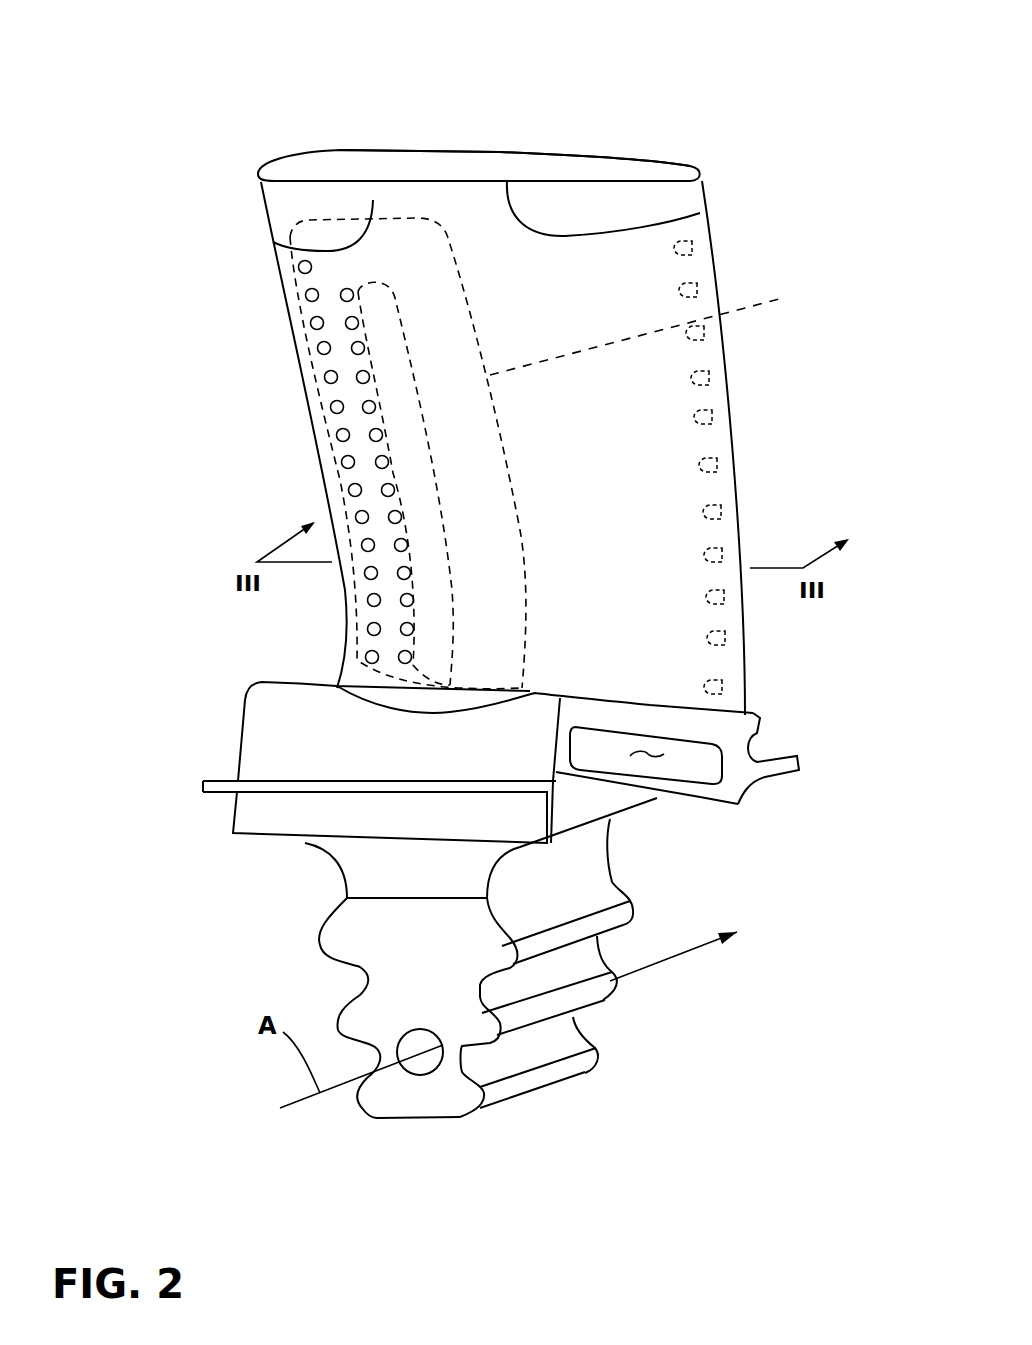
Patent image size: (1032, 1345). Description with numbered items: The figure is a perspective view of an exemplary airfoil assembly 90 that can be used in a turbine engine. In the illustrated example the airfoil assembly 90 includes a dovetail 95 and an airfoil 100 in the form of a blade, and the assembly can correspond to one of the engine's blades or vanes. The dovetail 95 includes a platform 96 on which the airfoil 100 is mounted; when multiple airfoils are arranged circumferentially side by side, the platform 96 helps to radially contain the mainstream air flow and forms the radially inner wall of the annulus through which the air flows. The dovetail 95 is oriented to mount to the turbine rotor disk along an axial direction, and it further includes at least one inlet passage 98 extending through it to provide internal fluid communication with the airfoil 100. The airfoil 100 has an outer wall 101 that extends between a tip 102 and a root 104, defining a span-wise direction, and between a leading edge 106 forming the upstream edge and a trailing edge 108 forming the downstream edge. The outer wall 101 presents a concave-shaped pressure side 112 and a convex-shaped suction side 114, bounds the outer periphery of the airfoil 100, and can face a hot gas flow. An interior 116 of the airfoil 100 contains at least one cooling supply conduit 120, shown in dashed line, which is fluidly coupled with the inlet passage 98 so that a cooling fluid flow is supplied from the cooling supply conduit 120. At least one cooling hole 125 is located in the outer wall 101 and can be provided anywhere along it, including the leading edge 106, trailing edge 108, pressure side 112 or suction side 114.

The airfoil assembly 90 is at (785, 78).
The dovetail 95 is at (235, 757).
The platform 96 is at (730, 725).
The inlet passage 98 is at (647, 753).
The airfoil 100 is at (507, 383).
The outer wall 101 is at (347, 200).
The tip 102 is at (540, 153).
The root 104 is at (275, 245).
The leading edge 106 is at (290, 325).
The trailing edge 108 is at (728, 390).
The pressure side 112 is at (700, 213).
The suction side 114 is at (425, 150).
The interior 116 is at (400, 443).
The cooling supply conduit 120 is at (661, 327).
The cooling hole 125 is at (353, 485).